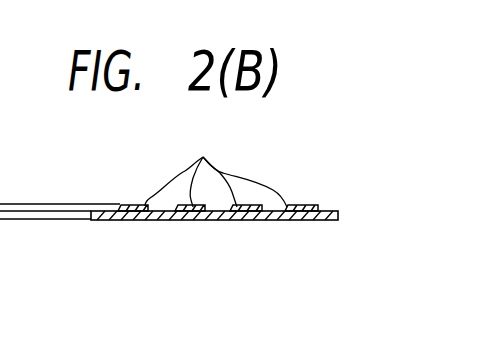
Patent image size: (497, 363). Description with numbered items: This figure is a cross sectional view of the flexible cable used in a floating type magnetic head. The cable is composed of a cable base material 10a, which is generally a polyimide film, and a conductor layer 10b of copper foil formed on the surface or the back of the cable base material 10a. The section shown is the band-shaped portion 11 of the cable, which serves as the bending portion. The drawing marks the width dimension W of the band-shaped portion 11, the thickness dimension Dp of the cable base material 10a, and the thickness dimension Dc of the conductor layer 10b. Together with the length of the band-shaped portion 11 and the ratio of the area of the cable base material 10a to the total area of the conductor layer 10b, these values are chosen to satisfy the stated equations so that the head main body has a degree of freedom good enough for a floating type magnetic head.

The cable base material 10a is at (265, 222).
The conductor layer 10b is at (216, 168).
The band-shaped portion 11 is at (167, 226).
The width dimension W is at (339, 226).
The thickness dimension of the conductor layer Dc is at (13, 165).
The thickness dimension of the cable base material Dp is at (13, 219).